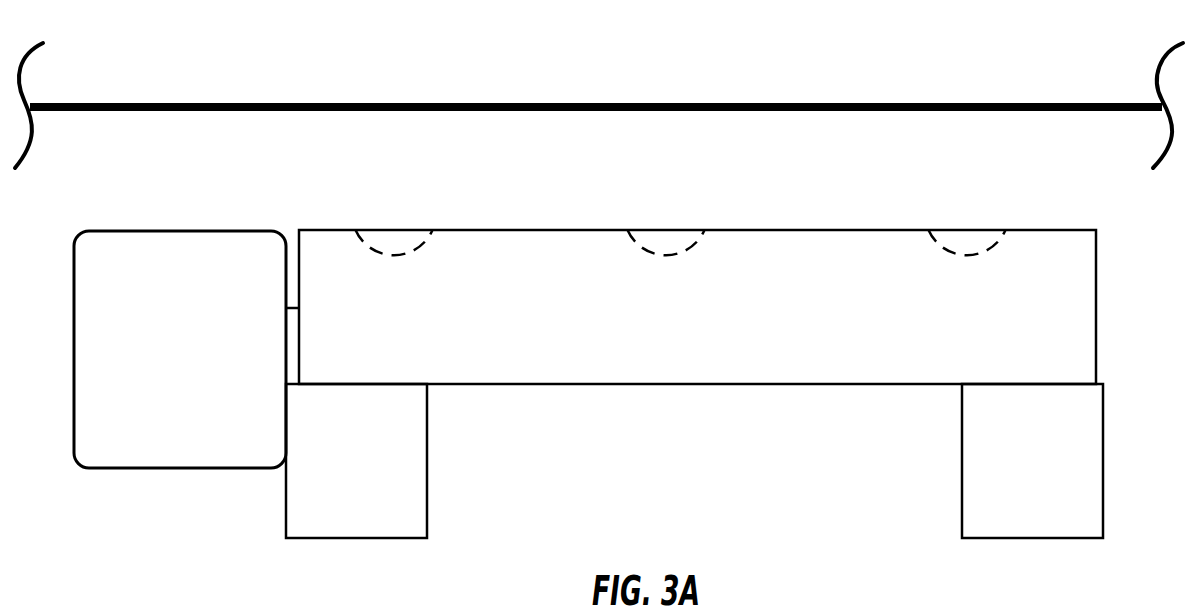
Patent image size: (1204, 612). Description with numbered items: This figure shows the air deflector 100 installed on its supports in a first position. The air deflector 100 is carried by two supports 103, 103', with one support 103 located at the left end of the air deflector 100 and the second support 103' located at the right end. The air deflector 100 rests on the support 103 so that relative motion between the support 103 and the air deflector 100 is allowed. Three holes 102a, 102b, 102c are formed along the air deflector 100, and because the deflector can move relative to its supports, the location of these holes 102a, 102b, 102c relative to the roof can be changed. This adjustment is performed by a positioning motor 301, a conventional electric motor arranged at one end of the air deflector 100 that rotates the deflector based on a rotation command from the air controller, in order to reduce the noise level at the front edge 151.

The front edge 151 is at (598, 103).
The air deflector 100 is at (650, 384).
The positioning motor 301 is at (180, 349).
The support 103 is at (356, 461).
The support 103' is at (1032, 461).
The hole 102a is at (397, 257).
The hole 102b is at (692, 255).
The hole 102c is at (960, 255).